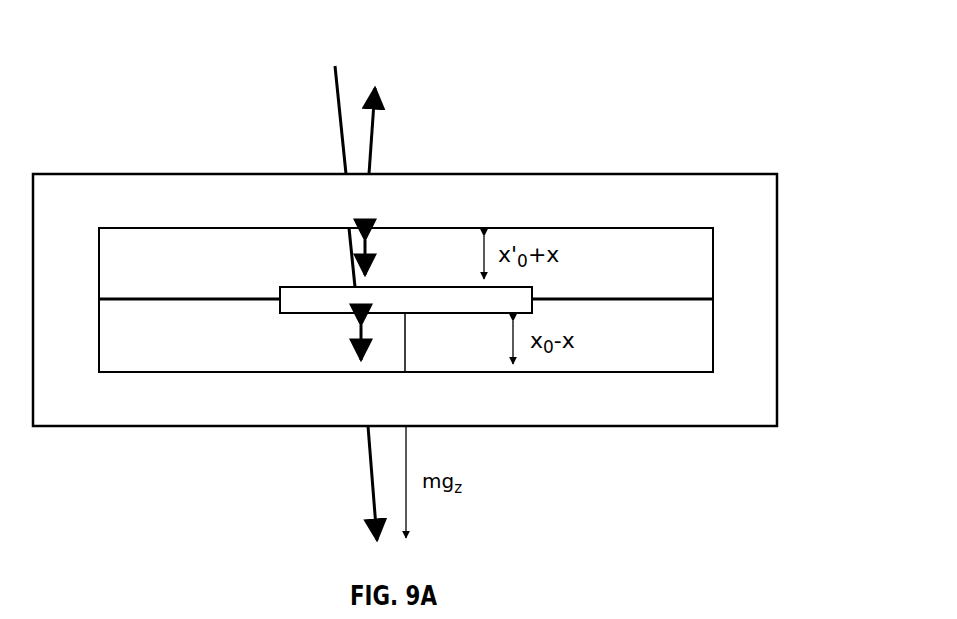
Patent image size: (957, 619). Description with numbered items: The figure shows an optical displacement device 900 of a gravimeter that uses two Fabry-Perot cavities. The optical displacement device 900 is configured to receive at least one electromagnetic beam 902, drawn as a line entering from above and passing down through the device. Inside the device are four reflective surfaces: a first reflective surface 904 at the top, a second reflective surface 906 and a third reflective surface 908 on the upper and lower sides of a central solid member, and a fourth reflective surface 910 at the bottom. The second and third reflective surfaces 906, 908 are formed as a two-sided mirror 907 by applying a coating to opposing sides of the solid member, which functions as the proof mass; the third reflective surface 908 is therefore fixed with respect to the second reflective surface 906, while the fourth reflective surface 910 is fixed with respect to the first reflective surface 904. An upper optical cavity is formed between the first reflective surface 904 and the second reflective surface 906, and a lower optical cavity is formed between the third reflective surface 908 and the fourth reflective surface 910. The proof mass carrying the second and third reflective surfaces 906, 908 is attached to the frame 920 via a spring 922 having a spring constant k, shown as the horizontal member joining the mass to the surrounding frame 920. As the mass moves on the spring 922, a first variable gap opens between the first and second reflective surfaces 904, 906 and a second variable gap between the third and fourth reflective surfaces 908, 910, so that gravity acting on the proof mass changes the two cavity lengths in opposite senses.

The optical displacement device 900 is at (149, 79).
The electromagnetic beam 902 is at (338, 120).
The first reflective surface 904 is at (283, 234).
The second reflective surface 906 is at (304, 280).
The two-sided mirror 907 is at (743, 174).
The third reflective surface 908 is at (304, 320).
The fourth reflective surface 910 is at (283, 365).
The frame 920 is at (668, 228).
The spring 922 is at (638, 299).